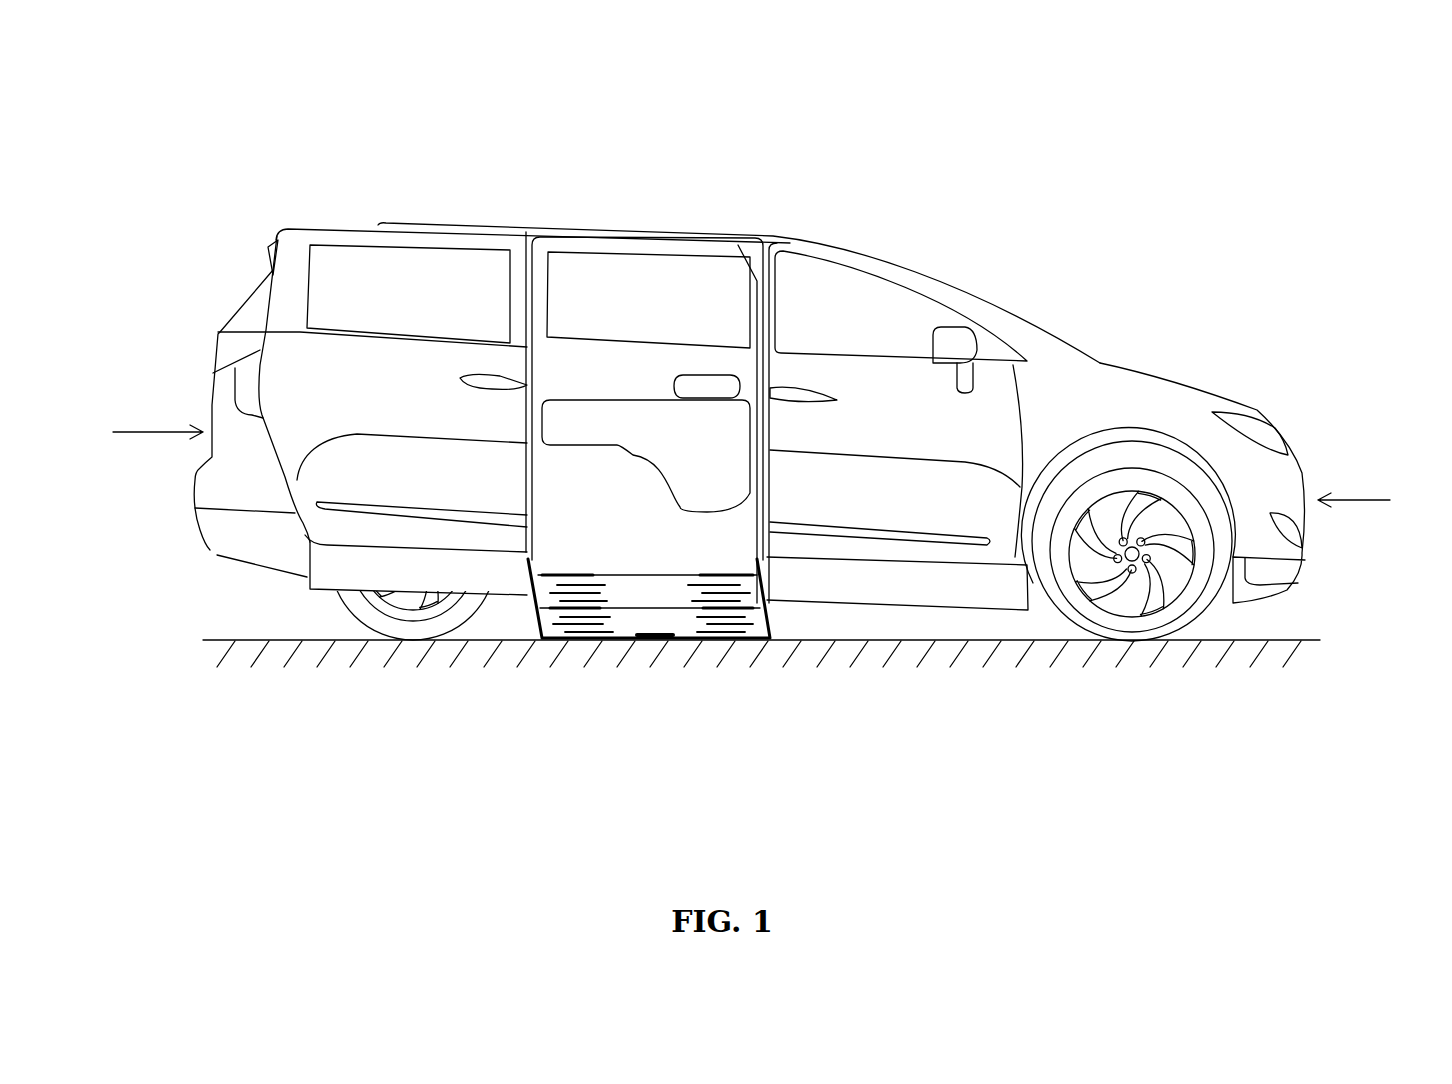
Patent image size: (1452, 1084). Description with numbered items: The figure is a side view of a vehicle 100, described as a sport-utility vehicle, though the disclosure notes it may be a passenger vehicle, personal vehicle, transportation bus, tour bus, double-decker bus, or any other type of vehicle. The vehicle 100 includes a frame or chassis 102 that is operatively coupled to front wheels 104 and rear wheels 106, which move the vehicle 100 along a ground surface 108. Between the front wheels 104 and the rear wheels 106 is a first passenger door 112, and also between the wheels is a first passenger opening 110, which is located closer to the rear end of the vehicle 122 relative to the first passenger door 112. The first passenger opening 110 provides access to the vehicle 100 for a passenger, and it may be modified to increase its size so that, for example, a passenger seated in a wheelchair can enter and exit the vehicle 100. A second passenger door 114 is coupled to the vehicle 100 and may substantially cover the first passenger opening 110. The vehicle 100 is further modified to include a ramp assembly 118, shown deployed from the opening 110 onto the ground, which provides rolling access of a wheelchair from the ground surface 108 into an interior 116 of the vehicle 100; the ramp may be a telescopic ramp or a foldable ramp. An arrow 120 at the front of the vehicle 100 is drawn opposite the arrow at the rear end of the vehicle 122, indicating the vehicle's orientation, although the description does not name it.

The vehicle 100 is at (1022, 148).
The frame or chassis 102 is at (1140, 387).
The front wheels 104 is at (1127, 627).
The rear wheels 106 is at (413, 630).
The ground surface 108 is at (238, 640).
The first passenger opening 110 is at (653, 288).
The first passenger door 112 is at (895, 553).
The second passenger door 114 is at (287, 352).
The interior 116 is at (617, 382).
The ramp assembly 118 is at (683, 627).
The forward direction 120 is at (1379, 501).
The rear end of a vehicle 122 is at (133, 435).